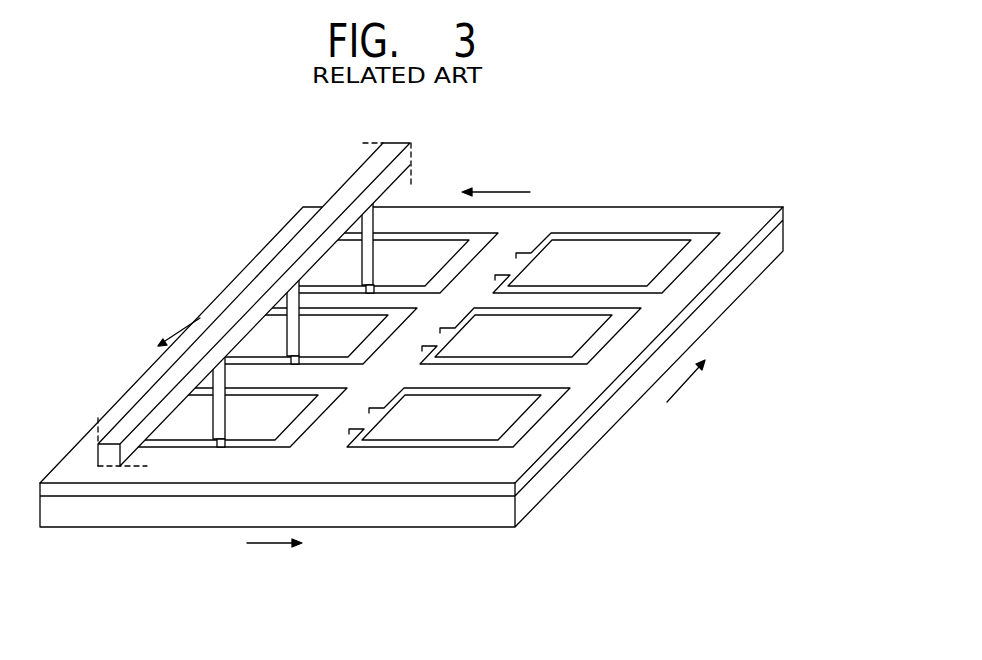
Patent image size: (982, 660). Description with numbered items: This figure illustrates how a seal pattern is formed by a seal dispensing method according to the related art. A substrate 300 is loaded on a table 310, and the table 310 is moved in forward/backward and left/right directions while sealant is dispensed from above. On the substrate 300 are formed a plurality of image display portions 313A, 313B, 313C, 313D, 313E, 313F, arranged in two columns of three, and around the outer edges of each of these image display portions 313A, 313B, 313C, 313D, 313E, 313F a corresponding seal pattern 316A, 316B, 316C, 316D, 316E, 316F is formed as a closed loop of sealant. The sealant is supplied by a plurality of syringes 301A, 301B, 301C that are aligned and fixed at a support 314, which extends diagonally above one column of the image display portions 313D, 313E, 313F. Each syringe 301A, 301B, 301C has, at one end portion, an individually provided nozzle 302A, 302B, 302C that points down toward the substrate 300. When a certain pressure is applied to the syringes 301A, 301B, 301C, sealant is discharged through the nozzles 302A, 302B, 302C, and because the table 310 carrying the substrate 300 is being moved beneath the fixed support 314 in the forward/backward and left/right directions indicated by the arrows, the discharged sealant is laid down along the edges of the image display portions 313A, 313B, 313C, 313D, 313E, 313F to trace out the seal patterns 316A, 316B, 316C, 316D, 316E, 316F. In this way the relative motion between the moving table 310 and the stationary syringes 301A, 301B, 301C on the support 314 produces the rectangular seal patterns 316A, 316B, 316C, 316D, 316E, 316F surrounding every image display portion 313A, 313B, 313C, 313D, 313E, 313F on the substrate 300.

The substrate 300 is at (374, 487).
The table 310 is at (463, 517).
The image display portion 313A is at (625, 268).
The image display portion 313B is at (551, 348).
The image display portion 313C is at (479, 423).
The image display portion 313D is at (426, 270).
The image display portion 313E is at (352, 348).
The image display portion 313F is at (282, 423).
The seal pattern 316A is at (697, 259).
The seal pattern 316B is at (617, 336).
The seal pattern 316C is at (537, 413).
The seal pattern 316D is at (433, 232).
The seal pattern 316E is at (393, 337).
The seal pattern 316F is at (253, 447).
The support 314 is at (358, 183).
The syringe 301A is at (362, 255).
The syringe 301B is at (287, 300).
The syringe 301C is at (213, 397).
The nozzle 302A is at (362, 290).
The nozzle 302B is at (287, 360).
The nozzle 302C is at (213, 440).